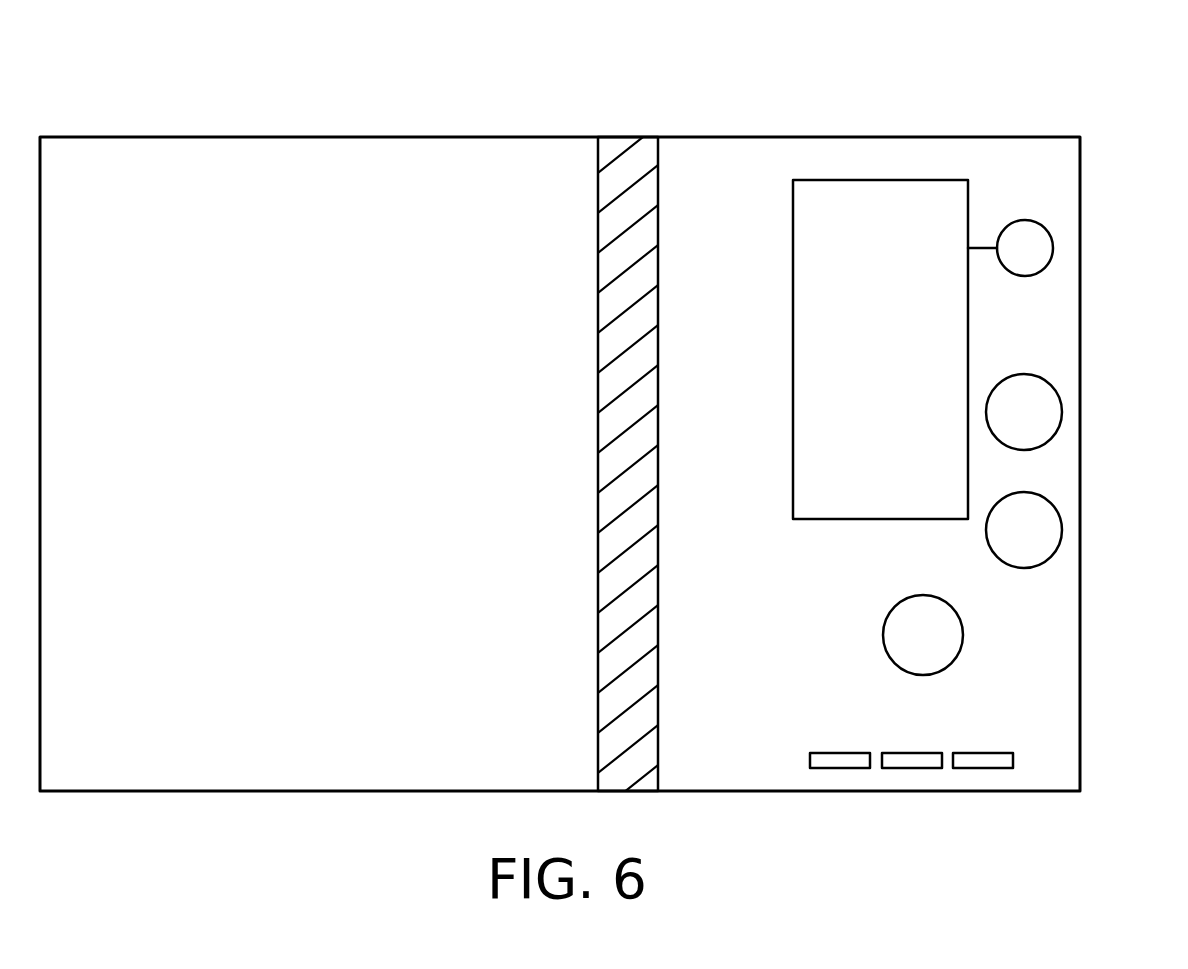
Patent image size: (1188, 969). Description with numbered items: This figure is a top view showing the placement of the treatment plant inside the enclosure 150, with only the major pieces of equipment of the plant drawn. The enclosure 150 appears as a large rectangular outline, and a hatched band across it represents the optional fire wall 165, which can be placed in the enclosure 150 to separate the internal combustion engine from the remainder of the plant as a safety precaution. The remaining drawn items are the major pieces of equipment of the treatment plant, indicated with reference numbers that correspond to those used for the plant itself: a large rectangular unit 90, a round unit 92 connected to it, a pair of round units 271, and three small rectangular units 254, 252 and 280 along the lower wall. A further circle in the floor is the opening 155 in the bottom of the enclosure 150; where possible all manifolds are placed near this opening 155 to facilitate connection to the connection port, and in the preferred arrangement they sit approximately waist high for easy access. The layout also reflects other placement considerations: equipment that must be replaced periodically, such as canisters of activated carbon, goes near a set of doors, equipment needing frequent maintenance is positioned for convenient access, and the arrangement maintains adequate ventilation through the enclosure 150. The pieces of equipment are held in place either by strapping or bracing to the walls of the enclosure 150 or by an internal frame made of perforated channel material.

The enclosure 150 is at (162, 137).
The fire wall 165 is at (624, 137).
The display 90 is at (868, 180).
The button 92 is at (1045, 228).
The buttons 271 is at (1046, 495).
The opening 155 is at (961, 641).
The port 254 is at (838, 768).
The port 252 is at (909, 768).
The port 280 is at (981, 768).